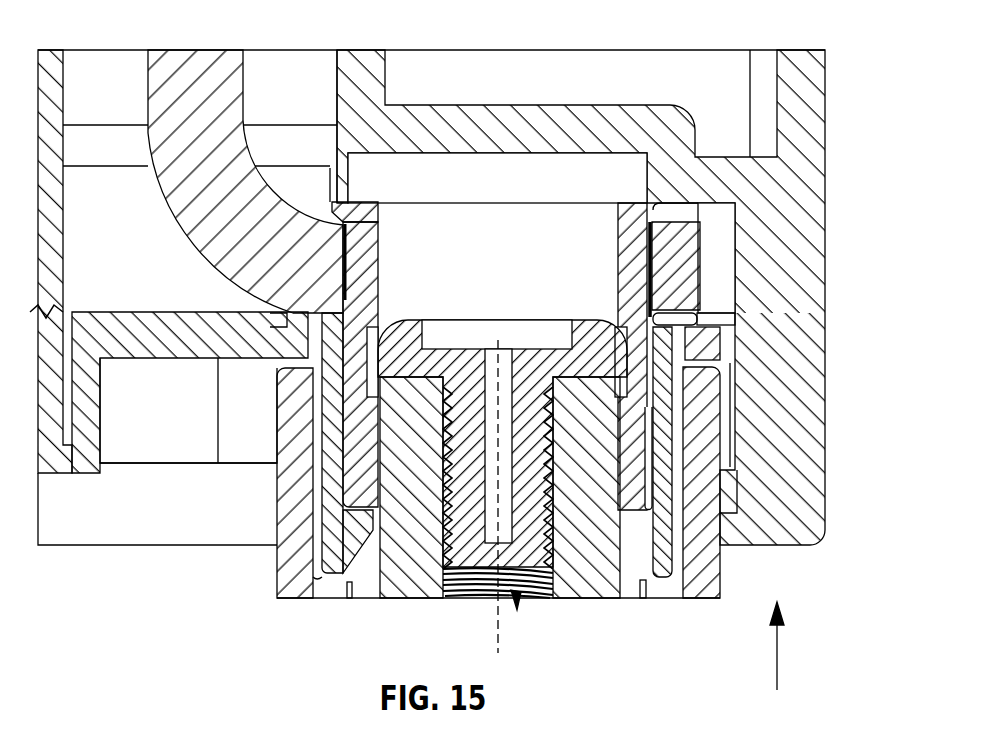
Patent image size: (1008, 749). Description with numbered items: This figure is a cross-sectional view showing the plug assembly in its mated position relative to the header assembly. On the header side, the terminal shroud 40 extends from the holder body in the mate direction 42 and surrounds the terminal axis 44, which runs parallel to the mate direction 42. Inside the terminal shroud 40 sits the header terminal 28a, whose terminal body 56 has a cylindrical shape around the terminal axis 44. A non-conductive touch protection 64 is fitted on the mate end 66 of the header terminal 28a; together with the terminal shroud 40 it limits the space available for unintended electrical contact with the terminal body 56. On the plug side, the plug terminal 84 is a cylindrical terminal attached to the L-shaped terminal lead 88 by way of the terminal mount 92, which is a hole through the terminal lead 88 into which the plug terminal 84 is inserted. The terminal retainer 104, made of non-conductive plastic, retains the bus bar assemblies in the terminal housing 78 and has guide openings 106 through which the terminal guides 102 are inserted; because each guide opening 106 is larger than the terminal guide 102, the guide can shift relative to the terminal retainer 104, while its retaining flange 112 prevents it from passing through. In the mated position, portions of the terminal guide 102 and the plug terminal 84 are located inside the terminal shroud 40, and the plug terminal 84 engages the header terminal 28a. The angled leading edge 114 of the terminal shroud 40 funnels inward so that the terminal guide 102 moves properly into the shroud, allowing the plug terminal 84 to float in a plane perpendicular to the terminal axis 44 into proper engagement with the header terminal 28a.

The header terminal 28a is at (617, 585).
The terminal shroud 40 is at (315, 580).
The mate direction 42 is at (778, 647).
The terminal axis 44 is at (500, 627).
The terminal body 56 is at (569, 483).
The touch protection 64 is at (530, 336).
The mate end 66 is at (435, 368).
The terminal housing 78 is at (825, 312).
The plug terminal 84 is at (487, 203).
The terminal lead 88 is at (248, 165).
The terminal mount 92 is at (700, 243).
The terminal guide 102 is at (322, 537).
The terminal retainer 104 is at (118, 312).
The guide opening 106 is at (308, 347).
The retaining flange 112 is at (710, 302).
The leading edge 114 is at (692, 375).